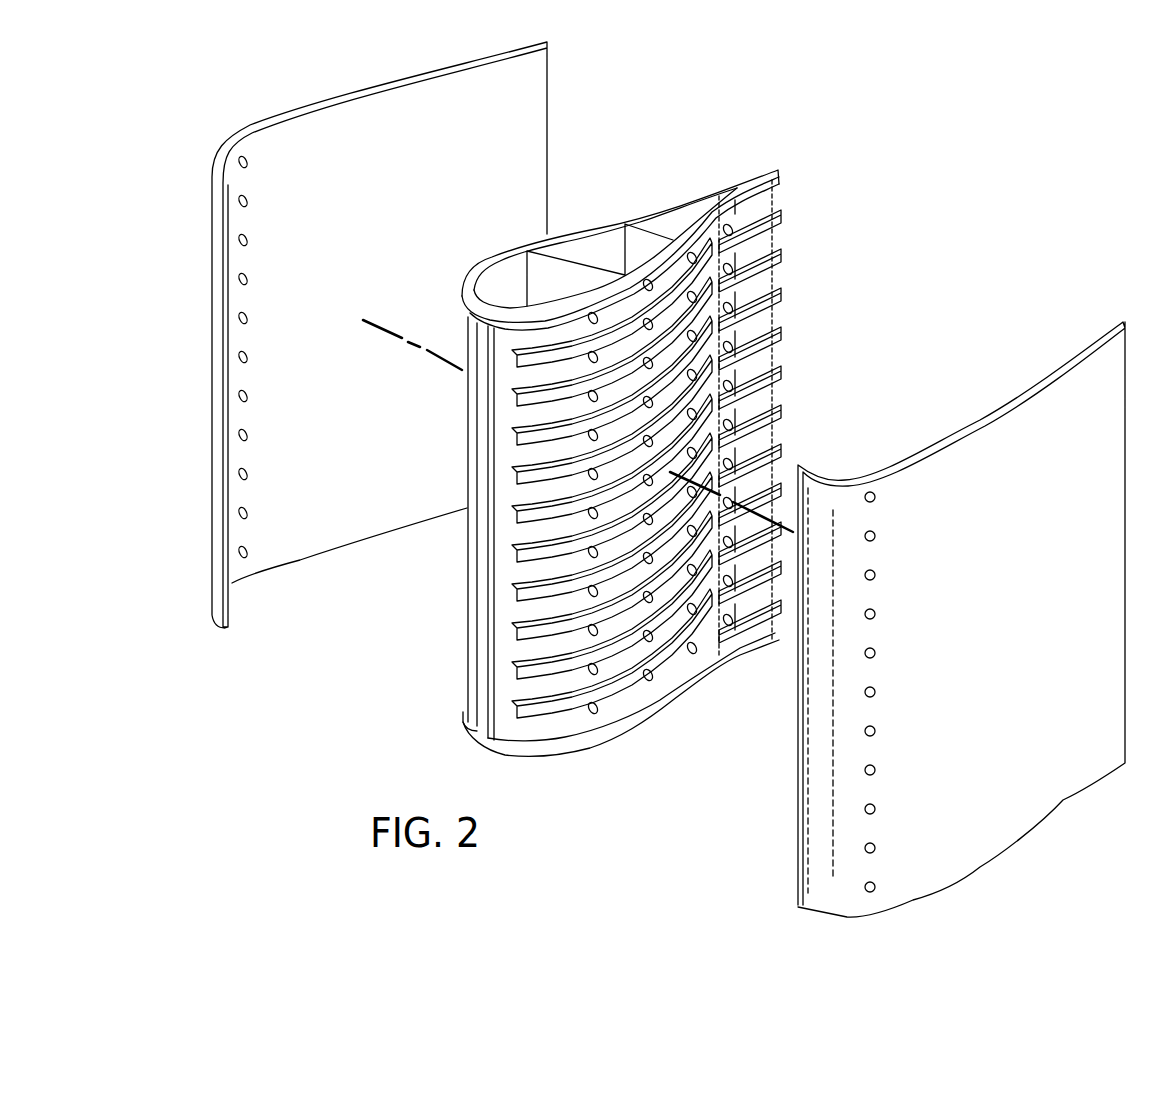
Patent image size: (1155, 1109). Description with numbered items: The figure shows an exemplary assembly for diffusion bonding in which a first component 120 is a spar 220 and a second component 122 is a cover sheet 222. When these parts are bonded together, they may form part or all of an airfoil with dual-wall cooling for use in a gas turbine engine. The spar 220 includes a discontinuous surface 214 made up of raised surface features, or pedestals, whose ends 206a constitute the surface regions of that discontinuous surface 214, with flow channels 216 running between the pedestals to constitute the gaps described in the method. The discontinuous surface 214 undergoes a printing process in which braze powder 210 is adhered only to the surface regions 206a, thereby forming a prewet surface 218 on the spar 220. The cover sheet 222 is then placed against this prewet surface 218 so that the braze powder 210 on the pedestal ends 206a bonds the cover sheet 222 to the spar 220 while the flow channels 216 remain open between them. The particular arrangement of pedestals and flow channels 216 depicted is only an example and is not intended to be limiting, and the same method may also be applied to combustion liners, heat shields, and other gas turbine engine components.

The first component 120 is at (617, 403).
The spar 220 is at (617, 403).
The second component 122 is at (668, 470).
The cover sheet 222 is at (317, 88).
The discontinuous surface 214 is at (617, 460).
The prewet surface 218 is at (795, 193).
The surface regions 206a is at (626, 469).
The braze powder 210 is at (755, 273).
The flow channels 216 is at (476, 444).